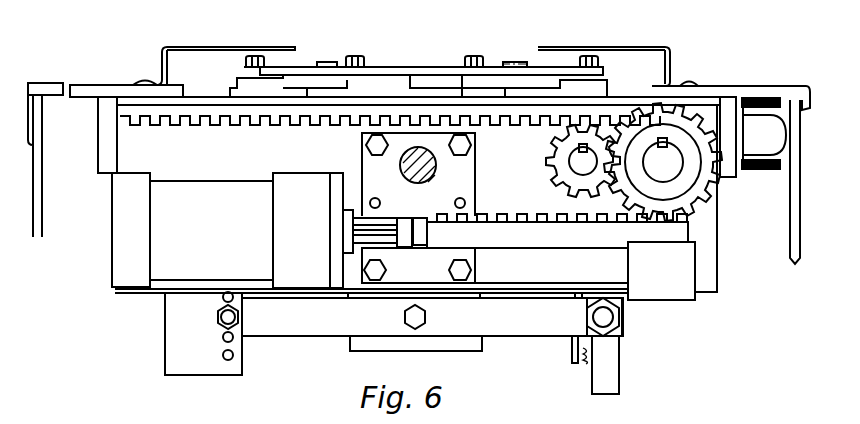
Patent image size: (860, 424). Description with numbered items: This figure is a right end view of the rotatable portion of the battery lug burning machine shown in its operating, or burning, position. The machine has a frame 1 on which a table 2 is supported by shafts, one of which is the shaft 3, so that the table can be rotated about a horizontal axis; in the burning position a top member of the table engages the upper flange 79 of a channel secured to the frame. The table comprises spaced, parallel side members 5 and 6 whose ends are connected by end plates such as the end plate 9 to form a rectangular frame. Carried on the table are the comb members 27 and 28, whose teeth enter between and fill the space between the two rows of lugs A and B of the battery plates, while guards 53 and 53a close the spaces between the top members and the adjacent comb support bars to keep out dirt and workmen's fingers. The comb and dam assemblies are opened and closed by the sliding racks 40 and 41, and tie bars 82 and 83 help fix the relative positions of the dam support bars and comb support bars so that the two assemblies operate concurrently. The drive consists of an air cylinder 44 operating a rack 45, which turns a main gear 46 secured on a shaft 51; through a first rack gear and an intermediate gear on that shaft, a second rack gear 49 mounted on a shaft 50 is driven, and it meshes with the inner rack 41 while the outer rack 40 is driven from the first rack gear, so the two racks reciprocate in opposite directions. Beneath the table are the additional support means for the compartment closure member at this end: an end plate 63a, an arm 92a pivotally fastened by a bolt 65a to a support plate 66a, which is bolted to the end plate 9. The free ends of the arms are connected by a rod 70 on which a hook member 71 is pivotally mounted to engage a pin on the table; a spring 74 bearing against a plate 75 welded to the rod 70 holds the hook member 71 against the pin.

The frame 1 is at (806, 79).
The table 2 is at (113, 62).
The shaft 3 is at (435, 172).
The side member 5 is at (100, 143).
The side member 6 is at (728, 102).
The end plate 9 is at (418, 194).
The comb member 27 is at (610, 87).
The comb member 28 is at (233, 87).
The sliding rack 40 is at (255, 127).
The sliding rack 41 is at (142, 122).
The air cylinder 44 is at (180, 267).
The rack 45 is at (565, 232).
The main gear 46 is at (700, 200).
The second rack gear 49 is at (567, 173).
The shaft 50 is at (572, 152).
The shaft 51 is at (665, 170).
The guard 53 is at (245, 47).
The guard 53a is at (580, 48).
The end plate 63a is at (445, 345).
The bolt 65a is at (232, 322).
The support plate 66a is at (170, 347).
The rod 70 is at (603, 317).
The hook member 71 is at (612, 357).
The spring 74 is at (585, 365).
The plate 75 is at (572, 357).
The upper flange 79 is at (770, 110).
The tie bar 82 is at (537, 60).
The tie bar 83 is at (298, 65).
The arm 92a is at (298, 333).
The lugs A is at (330, 62).
The lugs B is at (507, 62).